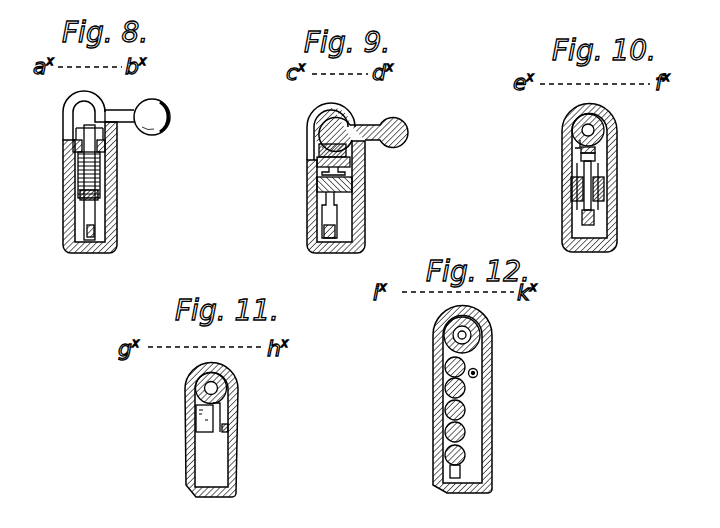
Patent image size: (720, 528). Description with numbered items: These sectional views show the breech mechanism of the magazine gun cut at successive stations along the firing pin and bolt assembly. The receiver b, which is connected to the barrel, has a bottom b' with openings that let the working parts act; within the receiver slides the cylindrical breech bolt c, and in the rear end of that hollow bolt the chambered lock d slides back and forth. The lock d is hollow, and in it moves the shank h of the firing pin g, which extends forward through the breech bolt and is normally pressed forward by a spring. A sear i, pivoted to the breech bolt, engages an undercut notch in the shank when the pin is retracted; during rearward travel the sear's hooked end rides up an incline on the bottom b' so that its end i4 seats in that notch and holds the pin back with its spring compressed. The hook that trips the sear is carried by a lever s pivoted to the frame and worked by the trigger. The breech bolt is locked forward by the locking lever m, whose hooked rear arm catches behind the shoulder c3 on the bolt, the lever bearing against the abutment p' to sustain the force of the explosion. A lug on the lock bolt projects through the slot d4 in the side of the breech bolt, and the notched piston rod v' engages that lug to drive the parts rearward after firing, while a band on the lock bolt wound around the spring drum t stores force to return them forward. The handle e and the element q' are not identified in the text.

In FIG. 8, the receiver b is at (100, 172).
In FIG. 9, the receiver b is at (348, 178).
In FIG. 10, the receiver b is at (600, 177).
In FIG. 11, the receiver b is at (228, 430).
In FIG. 12, the receiver b is at (475, 400).
In FIG. 8, the bottom of the receiver b' is at (68, 178).
In FIG. 10, the bottom of the receiver b' is at (554, 177).
In FIG. 8, the handle with ball e is at (162, 117).
In FIG. 9, the handle with ball e is at (374, 130).
In FIG. 8, the drum t is at (87, 193).
In FIG. 9, the chambered lock d is at (345, 123).
In FIG. 10, the chambered lock d is at (603, 125).
In FIG. 11, the chambered lock d is at (196, 386).
In FIG. 9, the locking lever m is at (320, 147).
In FIG. 10, the locking lever m is at (572, 188).
In FIG. 9, the abutment p' is at (302, 190).
In FIG. 9, the plunger q' is at (297, 215).
In FIG. 10, the plunger q' is at (558, 189).
In FIG. 9, the lever s is at (333, 245).
In FIG. 10, the lever s is at (586, 216).
In FIG. 10, the shoulder on the breech bolt c3 is at (575, 134).
In FIG. 10, the end of the sear i4 is at (606, 139).
In FIG. 10, the sear i is at (598, 156).
In FIG. 11, the breech bolt c is at (223, 381).
In FIG. 12, the breech bolt c is at (470, 329).
In FIG. 11, the shank of the firing pin h is at (218, 390).
In FIG. 11, the slot in the side of the breech bolt d4 is at (258, 400).
In FIG. 11, the piston rod v' is at (250, 433).
In FIG. 12, the piston rod v' is at (494, 362).
In FIG. 12, the firing pin g is at (466, 336).